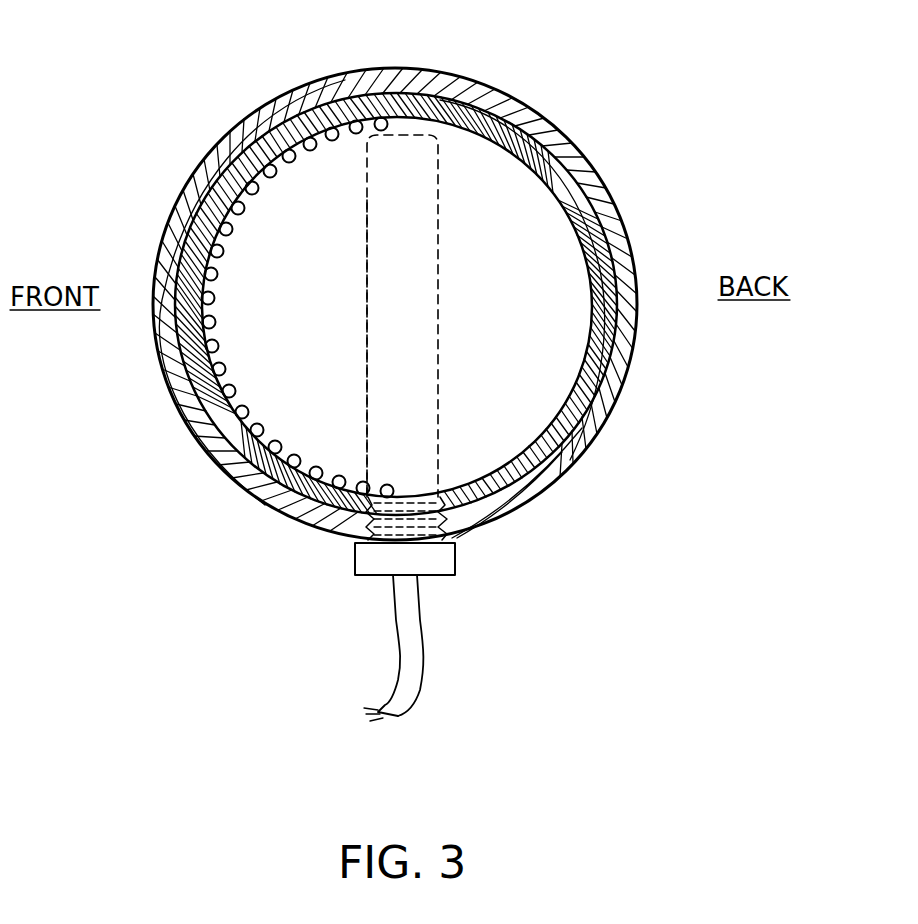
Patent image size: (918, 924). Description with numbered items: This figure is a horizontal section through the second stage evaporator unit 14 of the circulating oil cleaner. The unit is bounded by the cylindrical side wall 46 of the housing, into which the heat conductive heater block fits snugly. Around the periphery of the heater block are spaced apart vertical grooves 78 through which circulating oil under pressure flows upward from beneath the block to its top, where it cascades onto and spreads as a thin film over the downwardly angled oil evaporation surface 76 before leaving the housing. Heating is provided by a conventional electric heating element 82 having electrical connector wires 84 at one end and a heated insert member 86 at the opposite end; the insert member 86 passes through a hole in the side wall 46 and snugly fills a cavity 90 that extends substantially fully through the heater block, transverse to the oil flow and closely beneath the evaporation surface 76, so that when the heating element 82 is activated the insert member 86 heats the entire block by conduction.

The second stage evaporator unit 14 is at (623, 157).
The side wall 46 is at (590, 390).
The angled oil evaporation surface 76 is at (527, 316).
The grooves 78 is at (358, 510).
The electric heating element 82 is at (436, 558).
The electrical connector wires 84 is at (395, 702).
The heated insert member 86 is at (403, 222).
The cavity 90 is at (367, 327).